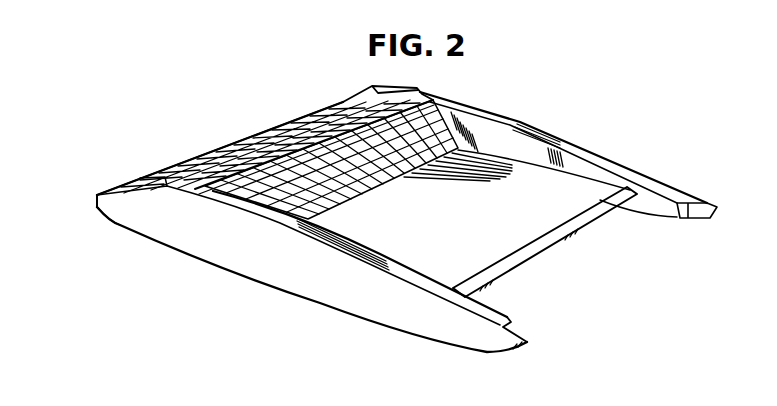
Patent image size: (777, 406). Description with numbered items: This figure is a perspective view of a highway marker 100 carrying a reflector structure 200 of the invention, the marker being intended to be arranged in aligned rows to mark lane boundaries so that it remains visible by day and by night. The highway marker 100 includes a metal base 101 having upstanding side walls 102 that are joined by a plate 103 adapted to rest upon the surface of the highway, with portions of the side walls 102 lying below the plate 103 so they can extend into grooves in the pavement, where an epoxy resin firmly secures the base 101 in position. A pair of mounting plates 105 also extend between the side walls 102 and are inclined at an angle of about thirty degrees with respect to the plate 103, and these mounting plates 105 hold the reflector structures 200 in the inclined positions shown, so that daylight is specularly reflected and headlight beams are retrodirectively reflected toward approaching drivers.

The highway marker 100 is at (197, 148).
The metal base 101 is at (205, 240).
The side walls 102 is at (314, 283).
The plate 103 is at (490, 243).
The mounting plates 105 is at (132, 222).
The reflector structure 200 is at (308, 180).